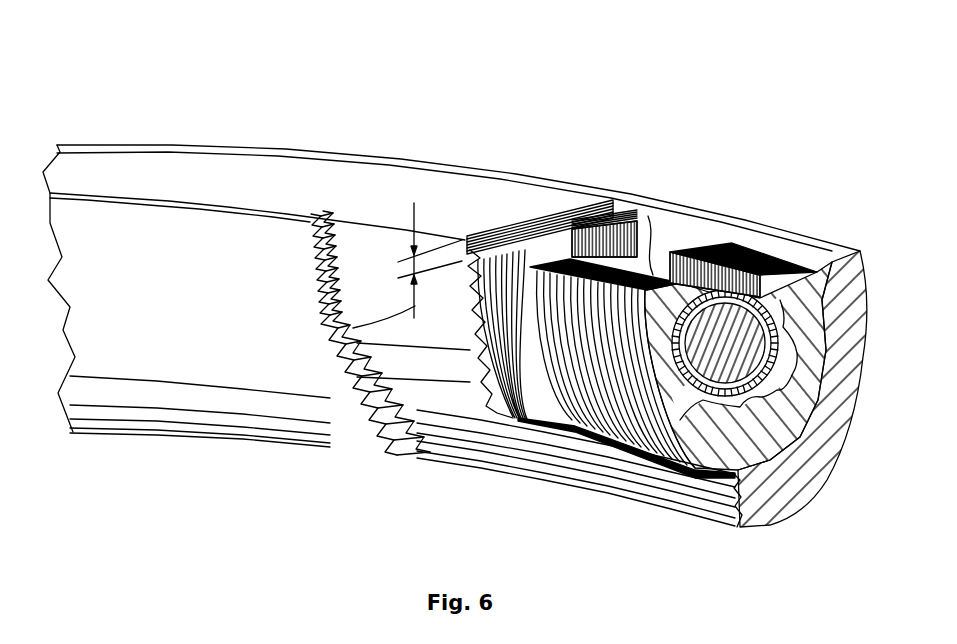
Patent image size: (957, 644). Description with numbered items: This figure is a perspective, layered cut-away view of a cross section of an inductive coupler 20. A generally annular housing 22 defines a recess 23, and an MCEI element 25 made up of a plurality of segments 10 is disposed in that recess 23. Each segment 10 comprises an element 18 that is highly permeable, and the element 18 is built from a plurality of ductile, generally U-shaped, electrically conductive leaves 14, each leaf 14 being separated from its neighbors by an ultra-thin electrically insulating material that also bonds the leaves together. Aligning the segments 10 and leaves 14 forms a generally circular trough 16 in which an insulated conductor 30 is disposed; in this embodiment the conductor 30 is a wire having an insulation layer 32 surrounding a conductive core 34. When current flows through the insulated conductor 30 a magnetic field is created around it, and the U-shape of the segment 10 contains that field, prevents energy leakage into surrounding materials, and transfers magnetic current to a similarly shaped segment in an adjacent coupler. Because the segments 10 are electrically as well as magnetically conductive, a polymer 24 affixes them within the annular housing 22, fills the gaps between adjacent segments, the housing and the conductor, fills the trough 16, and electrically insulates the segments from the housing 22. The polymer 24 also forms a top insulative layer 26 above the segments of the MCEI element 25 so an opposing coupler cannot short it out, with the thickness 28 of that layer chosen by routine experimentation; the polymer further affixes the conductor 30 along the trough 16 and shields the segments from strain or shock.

The segment 10 is at (693, 238).
The leaf 14 is at (507, 407).
The circular trough 16 is at (638, 218).
The element 18 is at (583, 447).
The inductive coupler 20 is at (402, 103).
The annular housing 22 is at (225, 403).
The recess 23 is at (770, 465).
The polymer 24 is at (168, 175).
The MCEI element 25 is at (587, 390).
The top insulative layer 26 is at (480, 250).
The thickness 28 is at (323, 327).
The insulated conductor 30 is at (787, 327).
The insulation layer 32 is at (733, 332).
The conductive core 34 is at (718, 297).